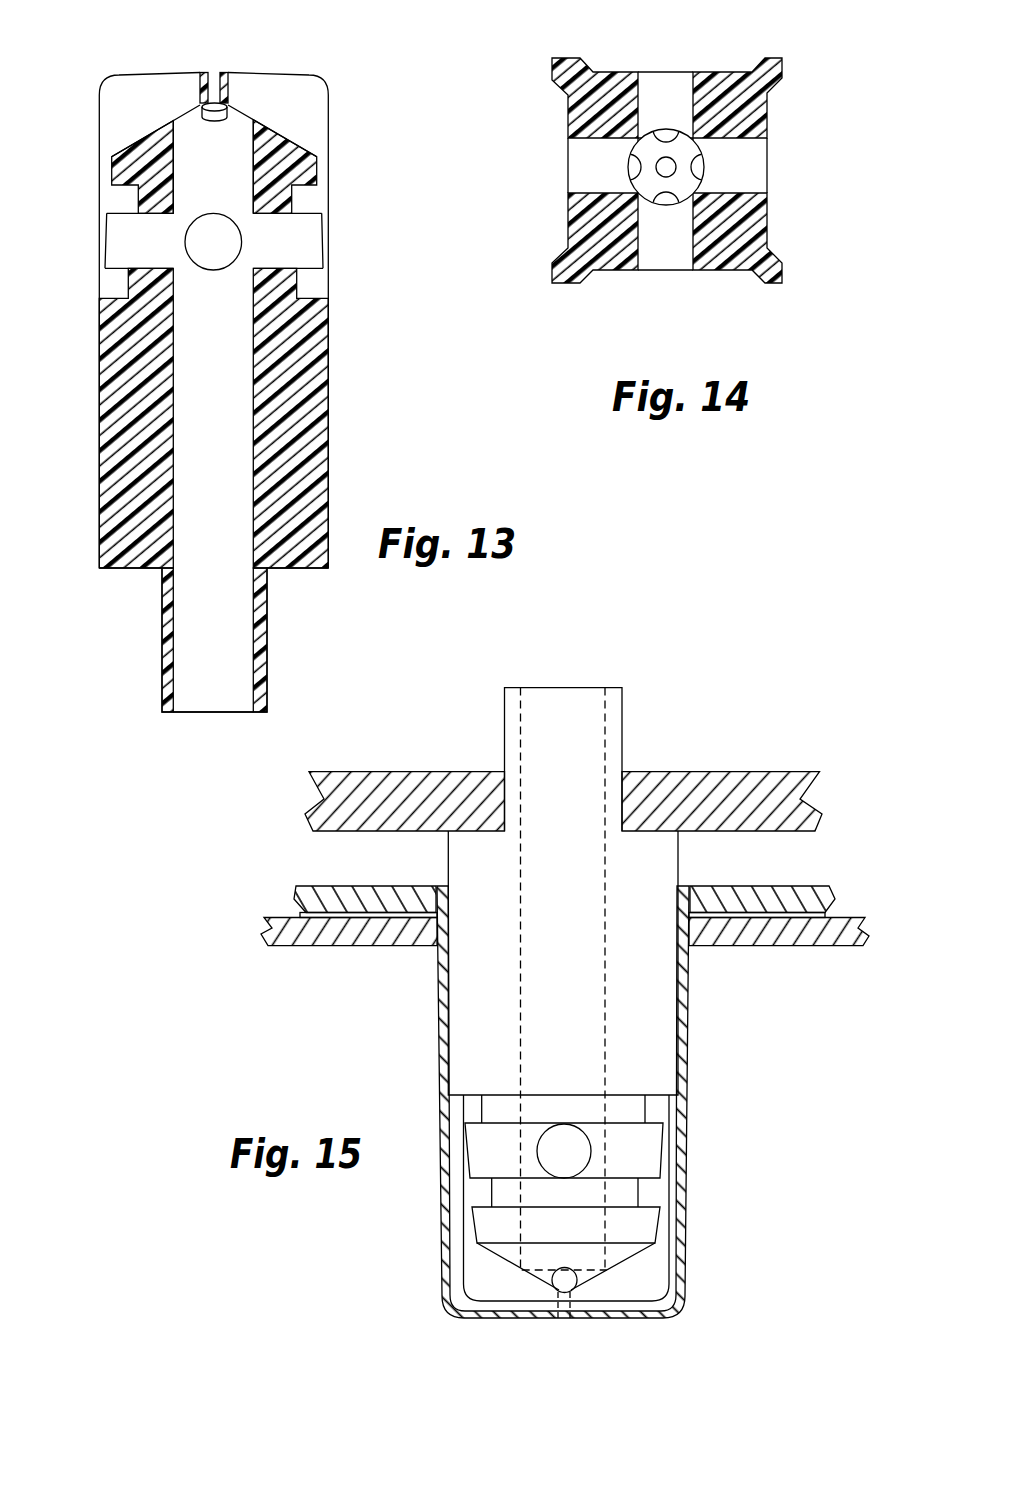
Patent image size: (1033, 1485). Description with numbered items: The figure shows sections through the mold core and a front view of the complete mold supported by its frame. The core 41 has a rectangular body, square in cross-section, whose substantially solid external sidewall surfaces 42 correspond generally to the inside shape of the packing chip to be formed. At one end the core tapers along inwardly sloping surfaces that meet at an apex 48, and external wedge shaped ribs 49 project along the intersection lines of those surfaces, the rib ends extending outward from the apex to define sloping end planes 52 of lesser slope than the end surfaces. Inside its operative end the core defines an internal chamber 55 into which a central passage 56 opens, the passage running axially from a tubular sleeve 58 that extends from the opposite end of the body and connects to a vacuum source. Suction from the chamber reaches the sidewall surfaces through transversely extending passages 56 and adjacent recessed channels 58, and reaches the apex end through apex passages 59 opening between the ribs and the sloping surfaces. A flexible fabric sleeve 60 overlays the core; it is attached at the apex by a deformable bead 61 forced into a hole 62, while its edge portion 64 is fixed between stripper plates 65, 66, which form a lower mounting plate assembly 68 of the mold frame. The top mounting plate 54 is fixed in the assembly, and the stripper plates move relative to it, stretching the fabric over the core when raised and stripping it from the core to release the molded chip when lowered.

In FIG. 13, the core 41 is at (336, 487).
In FIG. 14, the core 41 is at (770, 230).
In FIG. 14, the external sidewall surfaces 42 is at (718, 273).
In FIG. 15, the apex 48 is at (573, 1290).
In FIG. 14, the wedge shaped ribs 49 is at (560, 287).
In FIG. 13, the sloping end planes 52 is at (267, 72).
In FIG. 15, the top mounting plate 54 is at (732, 777).
In FIG. 13, the internal chamber 55 is at (213, 170).
In FIG. 13, the passage 56 is at (210, 243).
In FIG. 14, the passage 56 is at (668, 97).
In FIG. 13, the tubular sleeve 58 is at (306, 187).
In FIG. 15, the tubular sleeve 58 is at (622, 718).
In FIG. 13, the apex passages 59 is at (190, 120).
In FIG. 14, the apex passages 59 is at (700, 168).
In FIG. 15, the apex passages 59 is at (556, 1276).
In FIG. 15, the fabric sleeve 60 is at (688, 1147).
In FIG. 15, the bead 61 is at (570, 1318).
In FIG. 13, the hole 62 is at (215, 80).
In FIG. 15, the hole 62 is at (566, 1280).
In FIG. 15, the edge portion 64 is at (758, 914).
In FIG. 15, the stripper plate 65 is at (789, 888).
In FIG. 15, the stripper plate 66 is at (795, 930).
In FIG. 15, the lower mounting plate assembly 68 is at (294, 971).